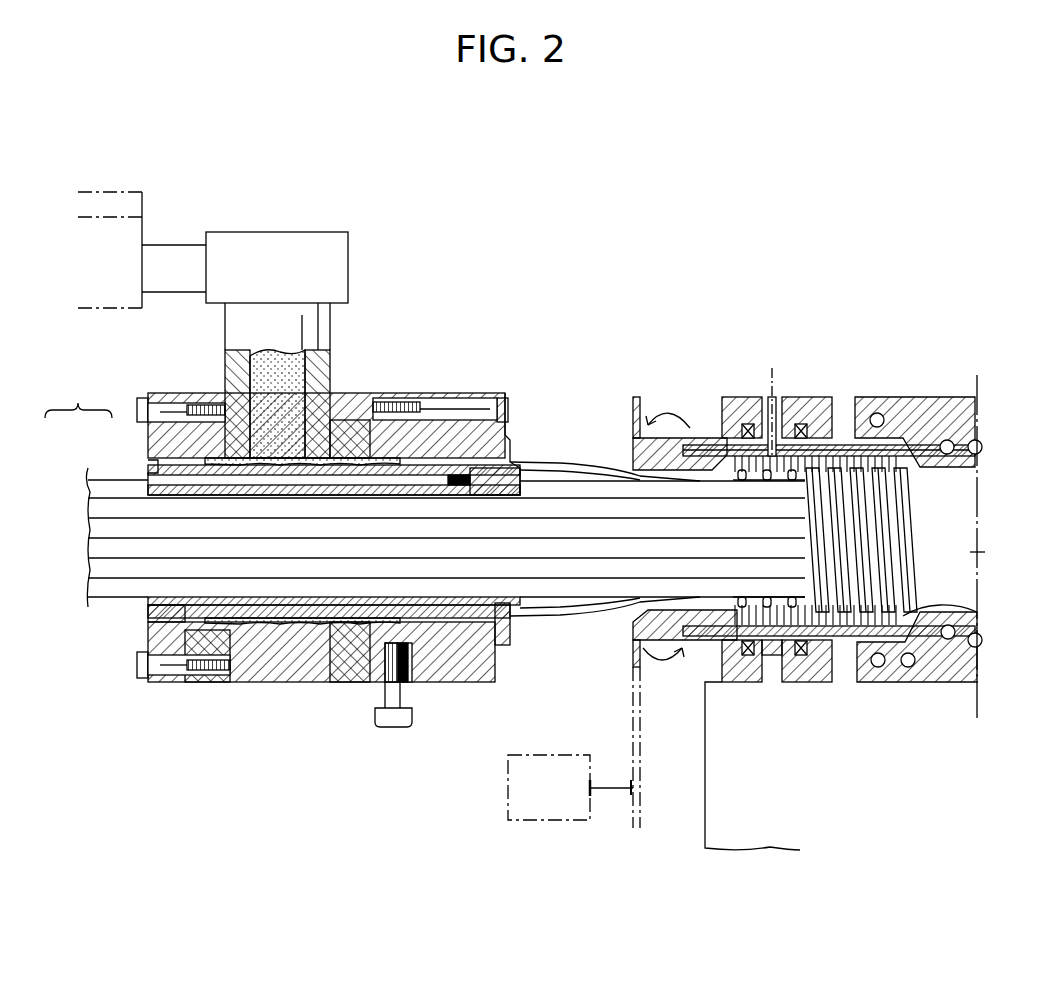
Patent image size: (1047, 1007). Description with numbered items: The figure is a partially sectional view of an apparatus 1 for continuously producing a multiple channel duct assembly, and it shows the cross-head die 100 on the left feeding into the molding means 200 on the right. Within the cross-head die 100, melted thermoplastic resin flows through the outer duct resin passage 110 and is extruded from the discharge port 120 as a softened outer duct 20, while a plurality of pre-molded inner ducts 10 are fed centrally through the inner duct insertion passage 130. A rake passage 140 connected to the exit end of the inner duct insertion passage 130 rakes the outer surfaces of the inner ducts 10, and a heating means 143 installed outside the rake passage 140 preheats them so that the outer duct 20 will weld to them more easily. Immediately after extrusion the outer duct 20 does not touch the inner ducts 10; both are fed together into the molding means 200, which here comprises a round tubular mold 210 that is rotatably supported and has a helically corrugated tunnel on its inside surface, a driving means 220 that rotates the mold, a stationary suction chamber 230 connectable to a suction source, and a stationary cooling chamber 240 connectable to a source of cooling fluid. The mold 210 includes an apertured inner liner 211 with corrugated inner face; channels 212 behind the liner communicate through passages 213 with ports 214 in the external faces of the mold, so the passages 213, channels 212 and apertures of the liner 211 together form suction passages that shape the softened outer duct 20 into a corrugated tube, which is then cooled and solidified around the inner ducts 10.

The rotary apparatus 1 is at (90, 400).
The inner ducts 10 is at (88, 585).
The outer duct 20 is at (540, 462).
The cross-head die 100 is at (391, 270).
The outer duct resin passage 110 is at (332, 625).
The discharge port 120 is at (512, 618).
The inner duct insertion passage 130 is at (192, 600).
The rake passage 140 is at (470, 600).
The heating means 143 is at (487, 465).
The molding means 200 is at (668, 380).
The round tubular mold 210 is at (697, 438).
The inner liner 211 is at (977, 613).
The channels 212 is at (843, 440).
The passages 213 is at (800, 396).
The ports 214 is at (768, 385).
The driving means 220 is at (562, 820).
The stationary suction chamber 230 is at (732, 396).
The stationary cooling chamber 240 is at (965, 396).